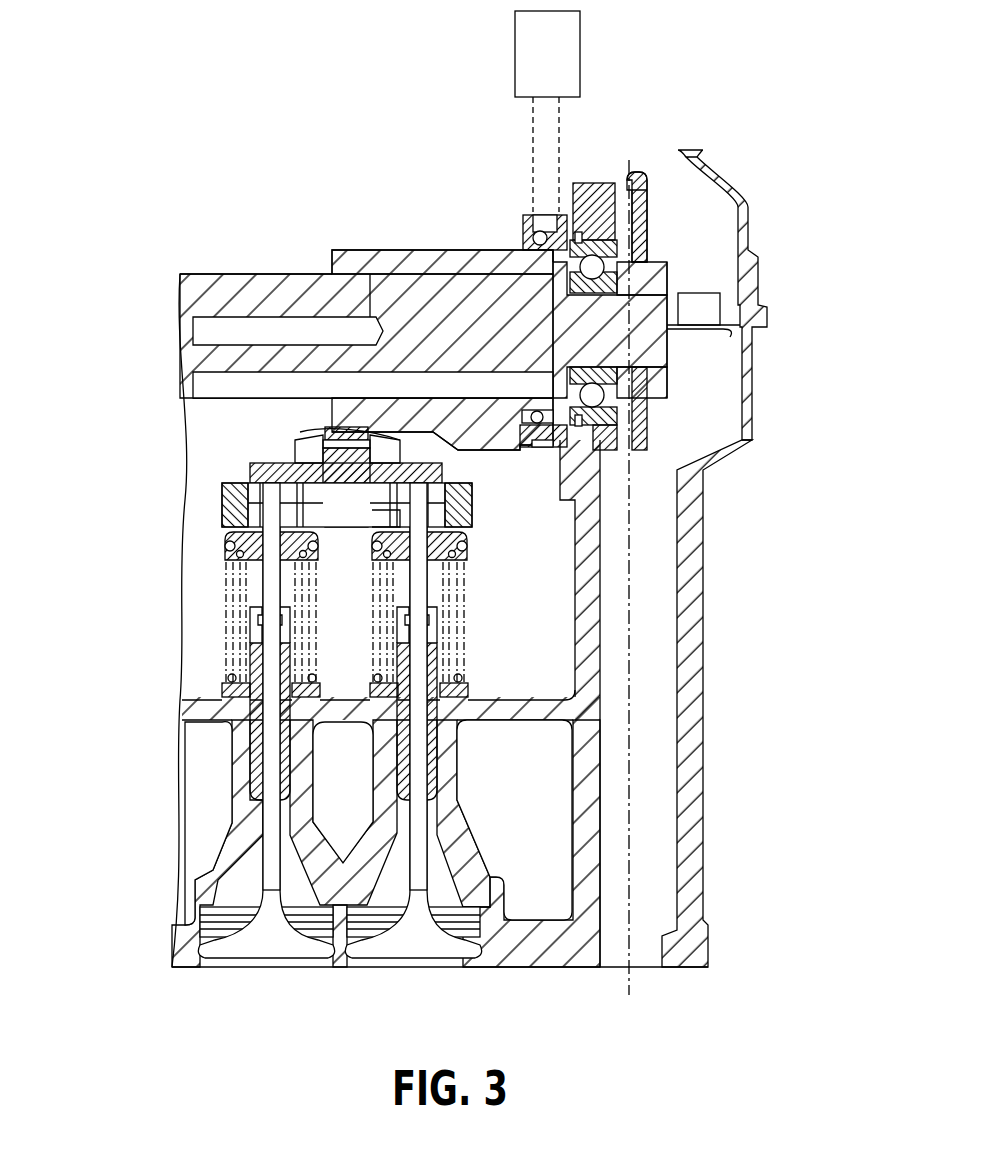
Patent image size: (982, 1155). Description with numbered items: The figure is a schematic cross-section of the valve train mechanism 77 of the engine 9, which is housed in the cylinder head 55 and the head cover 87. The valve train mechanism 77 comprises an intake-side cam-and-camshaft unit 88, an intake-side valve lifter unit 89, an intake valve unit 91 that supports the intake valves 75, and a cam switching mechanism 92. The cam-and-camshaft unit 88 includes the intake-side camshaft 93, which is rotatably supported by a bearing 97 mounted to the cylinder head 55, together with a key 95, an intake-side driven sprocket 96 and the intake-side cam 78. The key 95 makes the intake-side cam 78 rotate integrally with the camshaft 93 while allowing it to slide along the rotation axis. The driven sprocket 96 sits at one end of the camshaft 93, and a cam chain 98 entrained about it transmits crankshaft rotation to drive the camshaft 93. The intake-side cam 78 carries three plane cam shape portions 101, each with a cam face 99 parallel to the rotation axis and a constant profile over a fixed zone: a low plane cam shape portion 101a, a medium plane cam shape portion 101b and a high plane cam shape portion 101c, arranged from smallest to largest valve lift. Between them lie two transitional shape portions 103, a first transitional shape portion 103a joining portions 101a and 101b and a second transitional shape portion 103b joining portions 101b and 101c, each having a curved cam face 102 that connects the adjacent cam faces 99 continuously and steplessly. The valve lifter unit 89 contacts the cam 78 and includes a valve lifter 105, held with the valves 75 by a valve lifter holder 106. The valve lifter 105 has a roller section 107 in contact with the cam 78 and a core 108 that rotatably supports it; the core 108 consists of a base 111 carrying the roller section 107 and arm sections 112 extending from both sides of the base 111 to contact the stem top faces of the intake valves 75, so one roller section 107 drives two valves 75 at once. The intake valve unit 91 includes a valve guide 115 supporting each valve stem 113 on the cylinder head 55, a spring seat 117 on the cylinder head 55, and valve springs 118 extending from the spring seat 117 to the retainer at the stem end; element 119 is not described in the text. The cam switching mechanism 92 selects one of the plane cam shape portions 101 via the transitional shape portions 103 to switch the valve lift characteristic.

The engine 9 is at (683, 558).
The cylinder head 55 is at (704, 838).
The intake valve 75 is at (270, 950).
The valve train mechanism 77 is at (254, 258).
The intake-side cam 78 is at (440, 250).
The head cover 87 is at (742, 212).
The intake-side cam-and-camshaft unit 88 is at (359, 244).
The intake-side valve lifter unit 89 is at (231, 471).
The intake valve unit 91 is at (194, 664).
The cam switching mechanism 92 is at (580, 50).
The intake-side camshaft 93 is at (625, 345).
The key 95 is at (233, 387).
The intake-side driven sprocket 96 is at (648, 256).
The bearing 97 is at (610, 442).
The cam chain 98 is at (629, 796).
The cam face 99 is at (453, 498).
The plane cam shape portion 101 is at (453, 498).
The low plane cam shape portion 101a is at (320, 435).
The medium plane cam shape portion 101b is at (400, 470).
The high plane cam shape portion 101c is at (430, 455).
The curved cam face 102 is at (642, 544).
The transitional shape portion 103 is at (642, 544).
The first transitional shape portion 103a is at (440, 480).
The second transitional shape portion 103b is at (420, 462).
The valve lifter 105 is at (261, 514).
The valve lifter holder 106 is at (230, 540).
The roller section 107 is at (245, 510).
The core 108 is at (250, 487).
The base 111 is at (392, 520).
The arm section 112 is at (300, 432).
The valve stem 113 is at (250, 800).
The valve guide 115 is at (232, 748).
The spring seat 117 is at (230, 698).
The valve spring 118 is at (226, 623).
The inner valve spring 119 is at (227, 555).